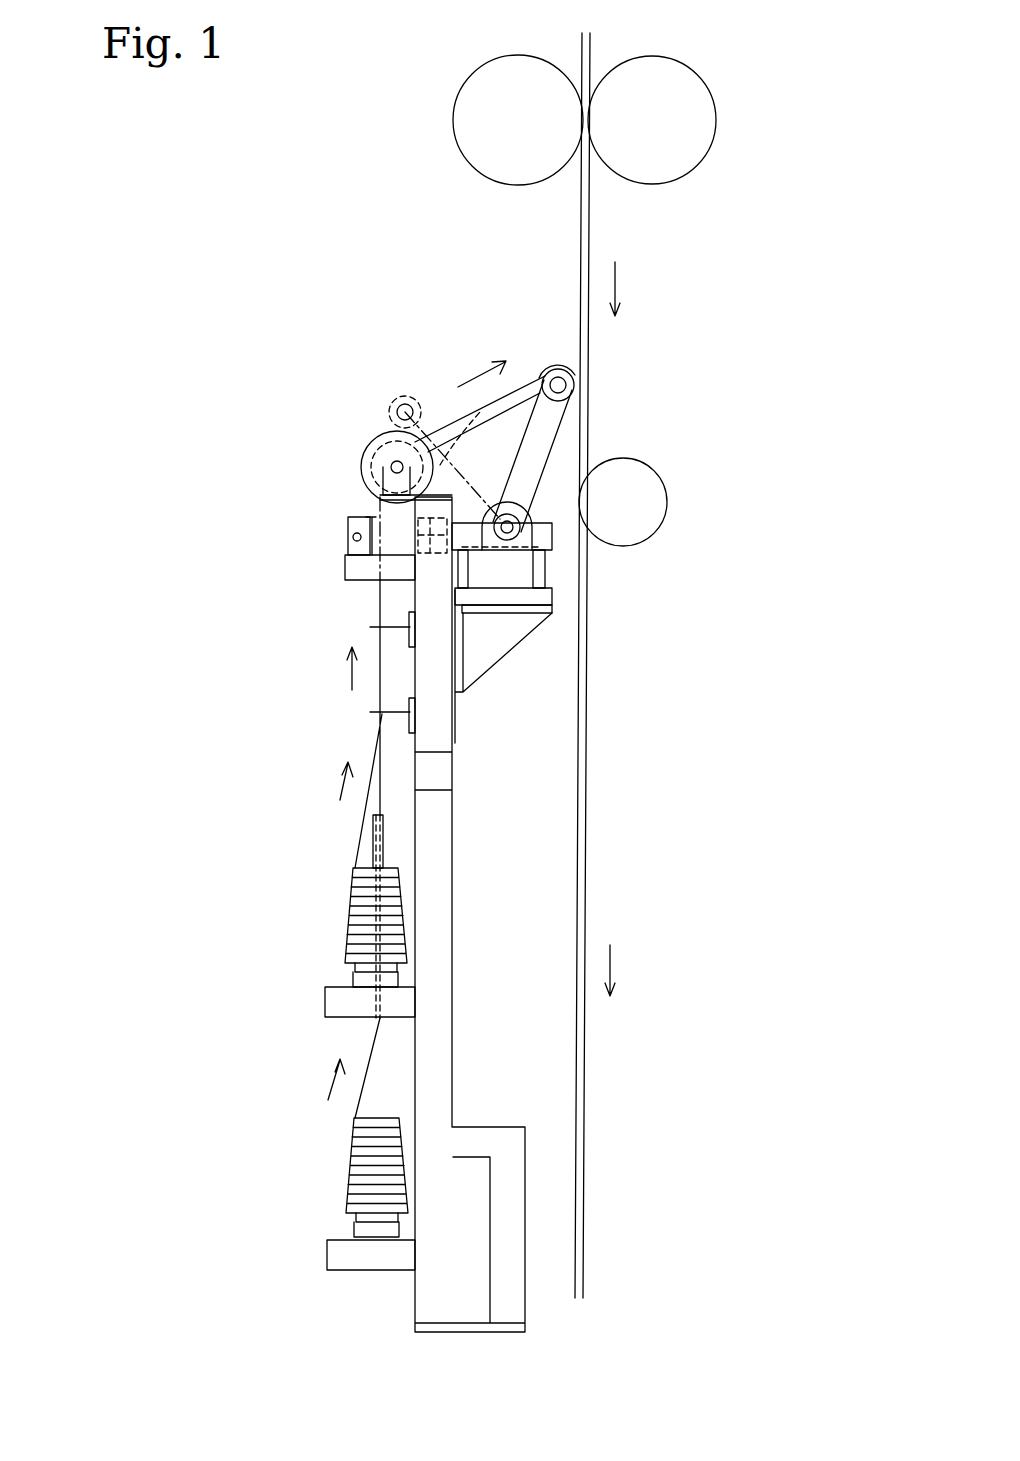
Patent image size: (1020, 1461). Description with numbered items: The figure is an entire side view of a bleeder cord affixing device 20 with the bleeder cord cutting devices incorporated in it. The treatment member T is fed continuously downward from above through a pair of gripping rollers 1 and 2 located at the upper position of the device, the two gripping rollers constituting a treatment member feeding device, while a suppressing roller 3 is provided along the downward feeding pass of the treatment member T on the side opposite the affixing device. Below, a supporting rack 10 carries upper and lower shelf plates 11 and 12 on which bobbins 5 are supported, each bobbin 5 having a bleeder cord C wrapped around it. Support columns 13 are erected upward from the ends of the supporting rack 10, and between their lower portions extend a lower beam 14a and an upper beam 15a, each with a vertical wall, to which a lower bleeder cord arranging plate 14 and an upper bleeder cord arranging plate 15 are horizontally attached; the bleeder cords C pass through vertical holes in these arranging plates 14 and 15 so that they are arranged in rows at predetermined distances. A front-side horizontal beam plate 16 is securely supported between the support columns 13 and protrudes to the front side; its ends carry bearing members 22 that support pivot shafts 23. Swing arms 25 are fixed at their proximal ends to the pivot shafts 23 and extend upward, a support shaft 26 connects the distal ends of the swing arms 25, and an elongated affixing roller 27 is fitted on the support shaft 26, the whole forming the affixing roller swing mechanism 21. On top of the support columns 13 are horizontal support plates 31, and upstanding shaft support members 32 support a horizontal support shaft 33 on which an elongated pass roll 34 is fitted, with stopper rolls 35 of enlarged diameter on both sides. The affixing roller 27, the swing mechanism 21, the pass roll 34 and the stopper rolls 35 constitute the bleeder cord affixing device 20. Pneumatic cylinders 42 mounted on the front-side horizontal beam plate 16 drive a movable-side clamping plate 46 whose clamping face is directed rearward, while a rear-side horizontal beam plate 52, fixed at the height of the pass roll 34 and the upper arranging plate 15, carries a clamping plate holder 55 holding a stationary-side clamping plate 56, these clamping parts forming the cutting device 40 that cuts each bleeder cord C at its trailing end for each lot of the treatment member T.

The gripping roller 1 is at (690, 62).
The gripping roller 2 is at (455, 100).
The suppressing roller 3 is at (668, 500).
The bobbin 5 is at (325, 930).
The supporting rack 10 is at (455, 1002).
The upper shelf plate 11 is at (325, 1003).
The lower shelf plate 12 is at (327, 1256).
The support column 13 is at (437, 672).
The lower bleeder cord arranging plate 14 is at (370, 712).
The lower beam 14a is at (410, 730).
The upper bleeder cord arranging plate 15 is at (370, 627).
The upper beam 15a is at (410, 640).
The front-side horizontal beam plate 16 is at (565, 610).
The bleeder cord affixing device 20 is at (442, 366).
The affixing roller swing mechanism 21 is at (515, 443).
The bearing member 22 is at (545, 572).
The pivot shaft 23 is at (535, 540).
The swing arm 25 is at (563, 427).
The support shaft 26 is at (568, 378).
The affixing roller 27 is at (545, 373).
The horizontal support plate 31 is at (450, 455).
The shaft support member 32 is at (393, 482).
The horizontal support shaft 33 is at (393, 460).
The pass roll 34 is at (437, 428).
The stopper roll 35 is at (393, 412).
The yarn holding device 40 is at (329, 546).
The pneumatic cylinder 42 is at (533, 523).
The movable-side clamping plate 46 is at (414, 539).
The rear-side horizontal beam plate 52 is at (353, 590).
The clamping plate holder 55 is at (348, 523).
The stationary-side clamping plate 56 is at (375, 520).
The treatment member T is at (580, 237).
The bleeder cord C is at (460, 417).